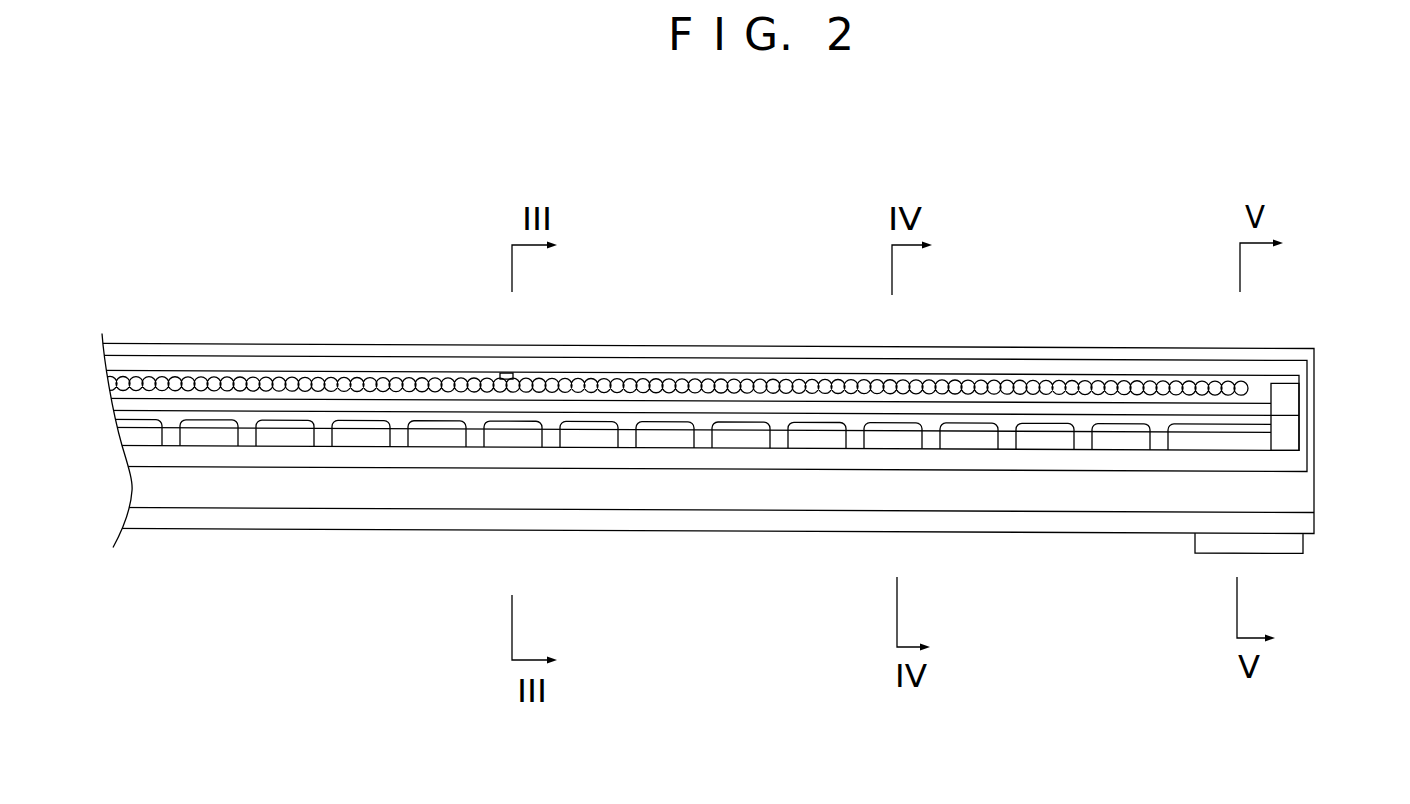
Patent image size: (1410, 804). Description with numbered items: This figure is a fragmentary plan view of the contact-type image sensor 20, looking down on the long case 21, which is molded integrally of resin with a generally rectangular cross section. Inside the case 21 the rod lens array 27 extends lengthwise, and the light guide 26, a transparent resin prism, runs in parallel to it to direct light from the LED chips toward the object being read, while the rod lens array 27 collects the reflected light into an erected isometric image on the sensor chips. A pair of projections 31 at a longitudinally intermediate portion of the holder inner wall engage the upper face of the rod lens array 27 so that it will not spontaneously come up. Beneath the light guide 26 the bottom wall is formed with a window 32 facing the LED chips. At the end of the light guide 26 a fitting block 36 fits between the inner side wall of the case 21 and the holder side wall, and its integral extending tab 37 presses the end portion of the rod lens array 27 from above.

The image sensor 20 is at (748, 303).
The case 21 is at (1322, 466).
The light guide 26 is at (1075, 417).
The rod lens array 27 is at (1250, 378).
The projections 31 is at (508, 373).
The window 32 is at (862, 434).
The fitting block 36 is at (1315, 422).
The extending tab 37 is at (1315, 381).